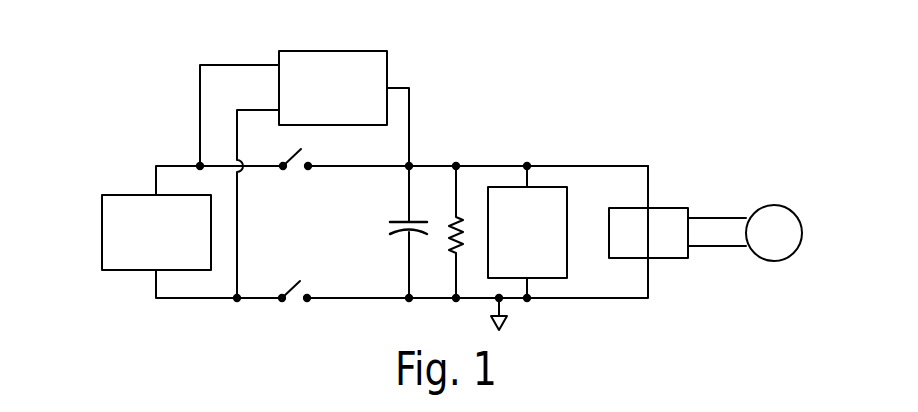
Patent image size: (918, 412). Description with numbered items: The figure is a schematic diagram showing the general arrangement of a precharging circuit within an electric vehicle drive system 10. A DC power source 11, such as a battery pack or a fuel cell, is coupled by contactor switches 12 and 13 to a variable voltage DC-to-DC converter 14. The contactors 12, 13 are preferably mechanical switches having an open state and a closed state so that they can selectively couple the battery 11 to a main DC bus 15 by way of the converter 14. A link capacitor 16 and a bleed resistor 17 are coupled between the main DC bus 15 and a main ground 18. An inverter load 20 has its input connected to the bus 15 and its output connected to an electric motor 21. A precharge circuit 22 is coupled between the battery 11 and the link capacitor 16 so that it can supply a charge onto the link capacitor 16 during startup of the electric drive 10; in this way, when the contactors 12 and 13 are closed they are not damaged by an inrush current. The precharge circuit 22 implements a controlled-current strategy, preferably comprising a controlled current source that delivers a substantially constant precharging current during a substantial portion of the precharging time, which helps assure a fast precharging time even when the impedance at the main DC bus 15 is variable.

The electric vehicle drive system 10 is at (162, 97).
The DC power source 11 is at (130, 192).
The contactor switch 12 is at (285, 155).
The contactor switch 13 is at (292, 282).
The variable voltage DC-to-DC converter 14 is at (568, 197).
The main DC bus 15 is at (515, 163).
The link capacitor 16 is at (397, 220).
The bleed resistor 17 is at (452, 218).
The main ground 18 is at (503, 306).
The inverter load 20 is at (668, 206).
The electric motor 21 is at (771, 205).
The precharge circuit 22 is at (298, 51).